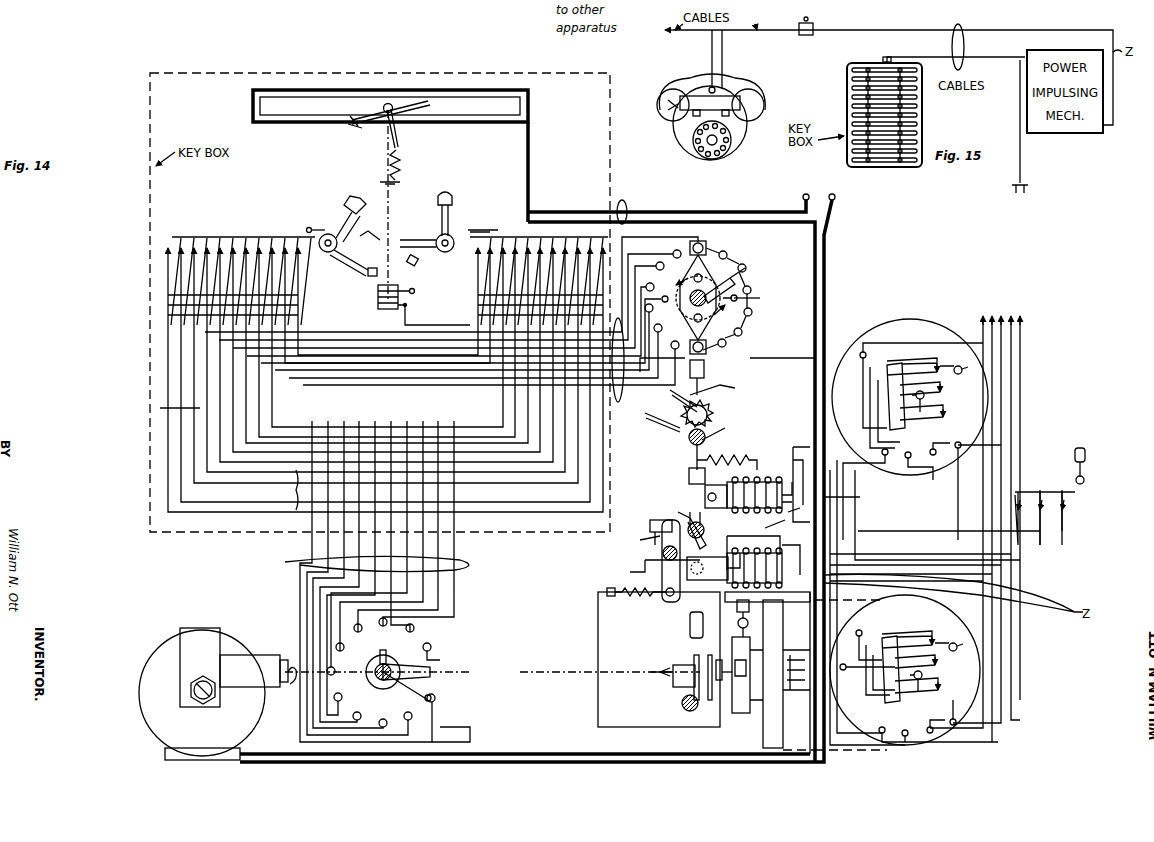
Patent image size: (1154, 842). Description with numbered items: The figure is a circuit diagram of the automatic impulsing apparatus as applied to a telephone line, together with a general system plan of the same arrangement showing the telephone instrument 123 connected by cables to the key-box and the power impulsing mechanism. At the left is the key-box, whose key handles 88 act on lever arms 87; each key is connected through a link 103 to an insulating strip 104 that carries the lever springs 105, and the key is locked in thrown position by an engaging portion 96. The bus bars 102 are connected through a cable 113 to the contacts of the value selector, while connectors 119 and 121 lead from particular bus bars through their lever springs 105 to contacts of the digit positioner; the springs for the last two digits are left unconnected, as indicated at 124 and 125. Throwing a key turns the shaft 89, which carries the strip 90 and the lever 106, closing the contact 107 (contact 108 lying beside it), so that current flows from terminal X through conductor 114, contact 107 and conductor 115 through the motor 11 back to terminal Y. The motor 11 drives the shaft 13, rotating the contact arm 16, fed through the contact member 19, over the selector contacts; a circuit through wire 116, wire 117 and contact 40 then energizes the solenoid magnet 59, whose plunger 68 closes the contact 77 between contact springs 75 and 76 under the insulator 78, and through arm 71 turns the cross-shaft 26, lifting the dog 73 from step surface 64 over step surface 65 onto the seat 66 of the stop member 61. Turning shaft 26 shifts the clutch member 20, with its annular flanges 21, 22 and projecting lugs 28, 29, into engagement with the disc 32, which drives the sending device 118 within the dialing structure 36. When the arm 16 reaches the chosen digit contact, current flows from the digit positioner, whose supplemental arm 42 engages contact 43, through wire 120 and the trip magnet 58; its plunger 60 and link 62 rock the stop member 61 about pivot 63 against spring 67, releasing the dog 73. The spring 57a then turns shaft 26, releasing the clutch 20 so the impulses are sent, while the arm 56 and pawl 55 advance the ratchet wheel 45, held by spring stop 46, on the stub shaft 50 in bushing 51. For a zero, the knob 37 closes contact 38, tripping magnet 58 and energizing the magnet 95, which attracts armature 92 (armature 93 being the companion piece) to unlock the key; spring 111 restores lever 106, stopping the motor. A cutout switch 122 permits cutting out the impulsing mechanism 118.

In FIG. 14, the motor 11 is at (150, 674).
In FIG. 14, the shaft 13 is at (290, 686).
In FIG. 14, the contact arm 16 is at (412, 655).
In FIG. 14, the contact member 19 is at (405, 688).
In FIG. 14, the clutch member 20 is at (675, 668).
In FIG. 14, the annular flange 21 is at (696, 660).
In FIG. 14, the annular flange 22 is at (710, 700).
In FIG. 14, the cross-shaft 26 is at (689, 440).
In FIG. 14, the projecting lug 28 is at (728, 700).
In FIG. 14, the projecting lug 29 is at (718, 664).
In FIG. 14, the disc 32 is at (742, 713).
In FIG. 14, the dialing structure 36 is at (763, 739).
In FIG. 14, the knob 37 is at (751, 627).
In FIG. 14, the contact 38 is at (749, 605).
In FIG. 14, the contact 40 is at (747, 675).
In FIG. 14, the supplemental arm 42 is at (745, 276).
In FIG. 14, the contact 43 is at (764, 298).
In FIG. 14, the ratchet wheel 45 is at (712, 412).
In FIG. 14, the spring stop 46 is at (660, 429).
In FIG. 14, the stub shaft 50 is at (712, 290).
In FIG. 14, the bushing 51 is at (726, 429).
In FIG. 14, the pawl 55 is at (713, 388).
In FIG. 14, the arm 56 is at (673, 400).
In FIG. 14, the spring 57a is at (727, 454).
In FIG. 14, the solenoid magnet 58 is at (763, 562).
In FIG. 14, the solenoid magnet 59 is at (759, 487).
In FIG. 14, the solenoid plunger 60 is at (706, 582).
In FIG. 14, the stop member 61 is at (662, 561).
In FIG. 14, the link 62 is at (680, 597).
In FIG. 14, the pivot 63 is at (662, 555).
In FIG. 14, the step surface 64 is at (655, 540).
In FIG. 14, the step surface 65 is at (650, 526).
In FIG. 14, the seat 66 is at (633, 541).
In FIG. 14, the spring 67 is at (636, 599).
In FIG. 14, the solenoid plunger 68 is at (716, 488).
In FIG. 14, the arm 71 is at (680, 512).
In FIG. 14, the dog 73 is at (686, 526).
In FIG. 14, the contact spring 75 is at (790, 450).
In FIG. 14, the contact spring 76 is at (854, 501).
In FIG. 14, the contact 77 is at (794, 515).
In FIG. 14, the insulator 78 is at (772, 530).
In FIG. 14, the lever arm 87 is at (333, 253).
In FIG. 14, the handle 88 is at (350, 197).
In FIG. 14, the rotatable shaft 89 is at (392, 105).
In FIG. 14, the strip 90 is at (370, 225).
In FIG. 14, the armature 92 is at (366, 274).
In FIG. 14, the armature 93 is at (420, 265).
In FIG. 14, the magnet 95 is at (376, 296).
In FIG. 14, the engaging portion 96 is at (402, 226).
In FIG. 14, the bus bars 102 is at (455, 450).
In FIG. 14, the link 103 is at (300, 222).
In FIG. 14, the insulating strip 104 is at (265, 236).
In FIG. 14, the lever springs 105 is at (207, 236).
In FIG. 14, the lever 106 is at (366, 116).
In FIG. 14, the contact 107 is at (350, 133).
In FIG. 14, the contact 108 is at (412, 128).
In FIG. 14, the spring 111 is at (400, 163).
In FIG. 14, the cable 113 is at (360, 563).
In FIG. 15, the cable 113 is at (886, 57).
In FIG. 14, the conductor 114 is at (716, 211).
In FIG. 14, the conductor 115 is at (733, 232).
In FIG. 14, the wire 116 is at (455, 738).
In FIG. 14, the wire 117 is at (588, 752).
In FIG. 14, the sending device 118 is at (930, 622).
In FIG. 14, the connector 119 is at (168, 366).
In FIG. 14, the wire 120 is at (727, 369).
In FIG. 14, the connector 121 is at (160, 408).
In FIG. 14, the cutout switch 122 is at (1100, 458).
In FIG. 15, the cutout switch 122 is at (813, 26).
In FIG. 14, the telephone instrument 123 is at (880, 340).
In FIG. 15, the telephone instrument 123 is at (733, 140).
In FIG. 14, the unconnected spring position 124 is at (304, 418).
In FIG. 14, the unconnected spring position 125 is at (296, 500).